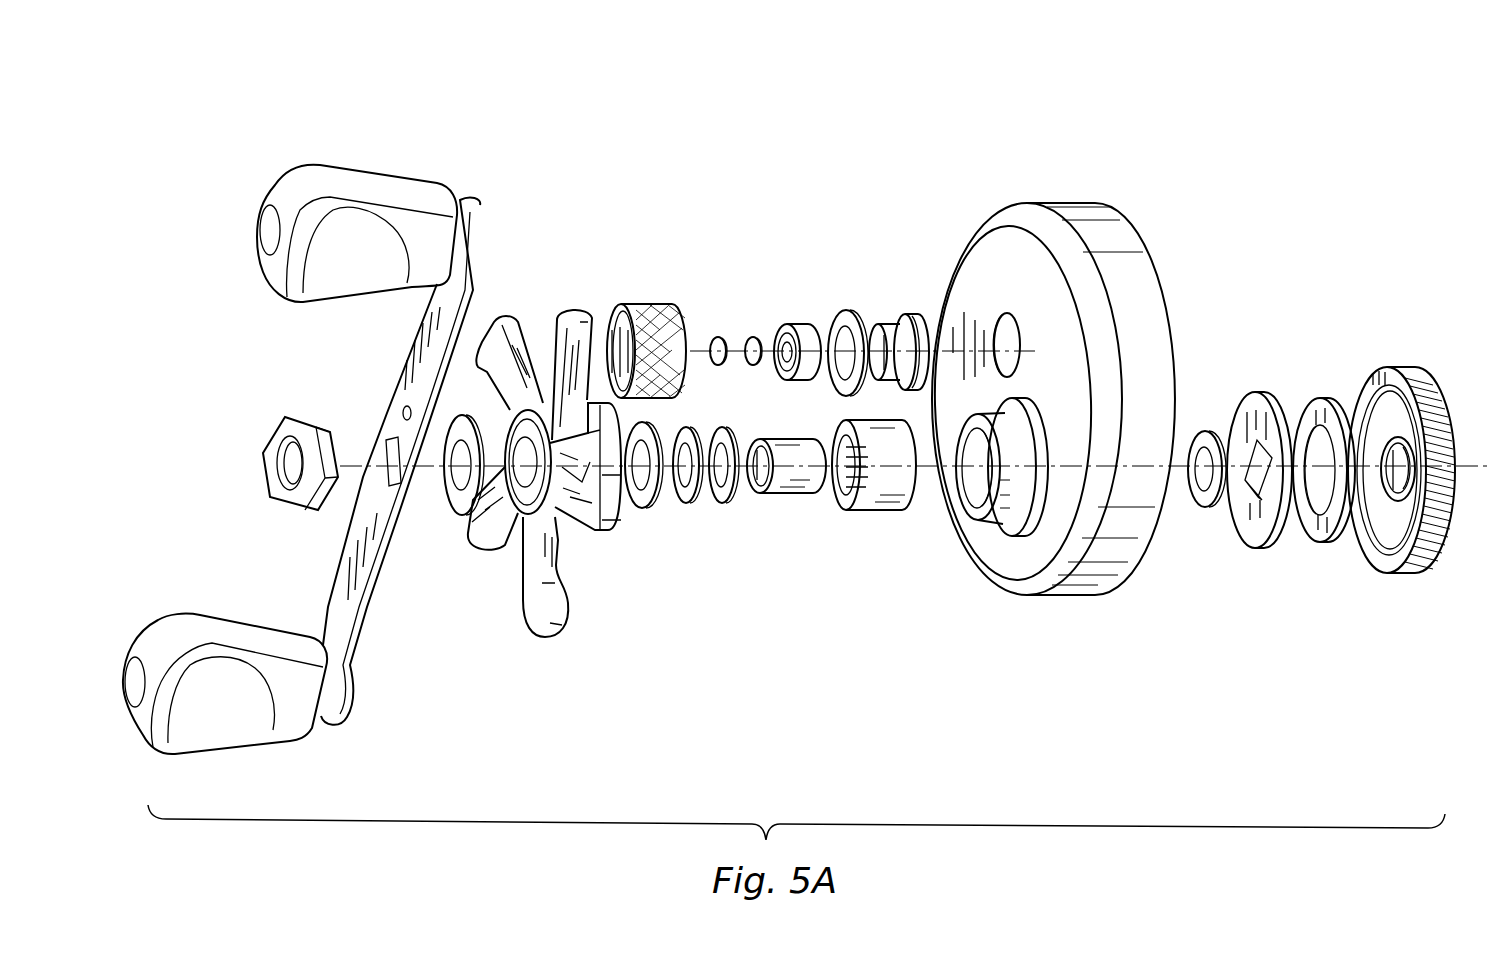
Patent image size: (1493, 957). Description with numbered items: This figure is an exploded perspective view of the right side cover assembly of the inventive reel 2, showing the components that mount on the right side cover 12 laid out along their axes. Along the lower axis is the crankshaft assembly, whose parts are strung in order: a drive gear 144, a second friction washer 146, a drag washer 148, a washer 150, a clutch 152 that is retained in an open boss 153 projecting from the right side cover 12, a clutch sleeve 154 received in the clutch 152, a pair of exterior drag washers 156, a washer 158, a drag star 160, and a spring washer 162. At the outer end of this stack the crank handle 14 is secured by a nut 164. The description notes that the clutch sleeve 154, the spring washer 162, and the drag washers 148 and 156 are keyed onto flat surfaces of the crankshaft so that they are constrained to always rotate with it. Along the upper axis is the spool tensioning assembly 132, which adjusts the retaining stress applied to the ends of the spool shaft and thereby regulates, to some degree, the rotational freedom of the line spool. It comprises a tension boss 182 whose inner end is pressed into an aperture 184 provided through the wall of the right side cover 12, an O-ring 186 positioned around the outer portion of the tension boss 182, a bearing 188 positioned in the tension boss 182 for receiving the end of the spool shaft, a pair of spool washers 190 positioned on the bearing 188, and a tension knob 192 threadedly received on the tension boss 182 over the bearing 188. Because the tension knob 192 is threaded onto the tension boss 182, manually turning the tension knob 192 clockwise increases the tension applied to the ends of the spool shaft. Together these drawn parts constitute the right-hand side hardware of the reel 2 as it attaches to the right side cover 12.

The inventive reel 2 is at (718, 178).
The right side cover 12 is at (1063, 206).
The crank handle 14 is at (381, 184).
The spool tensioning assembly 132 is at (820, 300).
The drive gear 144 is at (1390, 366).
The second friction washer 146 is at (1320, 538).
The drag washer 148 is at (1253, 412).
The washer 150 is at (1206, 509).
The clutch 152 is at (871, 511).
The open boss 153 is at (996, 515).
The clutch sleeve 154 is at (790, 494).
The exterior drag washers 156 is at (686, 504).
The washer 158 is at (638, 508).
The drag star 160 is at (550, 640).
The spring washer 162 is at (456, 508).
The nut 164 is at (280, 433).
The tension boss 182 is at (904, 313).
The aperture 184 is at (1005, 313).
The O-ring 186 is at (851, 313).
The bearing 188 is at (797, 322).
The spool washers 190 is at (749, 335).
The tension knob 192 is at (655, 303).